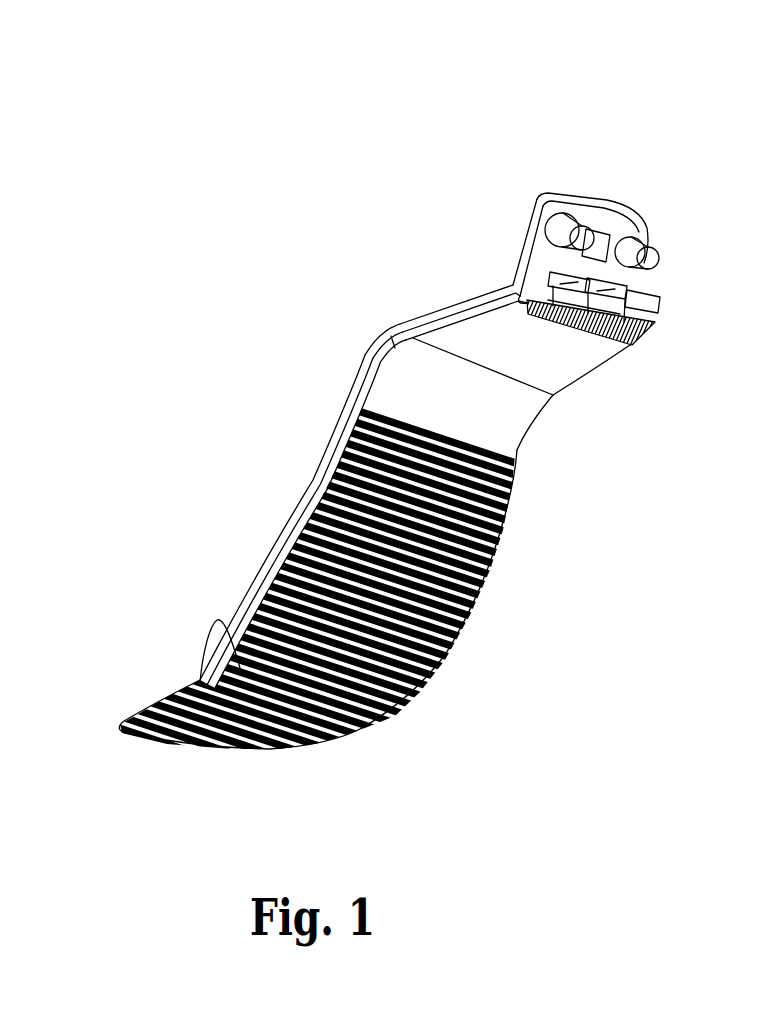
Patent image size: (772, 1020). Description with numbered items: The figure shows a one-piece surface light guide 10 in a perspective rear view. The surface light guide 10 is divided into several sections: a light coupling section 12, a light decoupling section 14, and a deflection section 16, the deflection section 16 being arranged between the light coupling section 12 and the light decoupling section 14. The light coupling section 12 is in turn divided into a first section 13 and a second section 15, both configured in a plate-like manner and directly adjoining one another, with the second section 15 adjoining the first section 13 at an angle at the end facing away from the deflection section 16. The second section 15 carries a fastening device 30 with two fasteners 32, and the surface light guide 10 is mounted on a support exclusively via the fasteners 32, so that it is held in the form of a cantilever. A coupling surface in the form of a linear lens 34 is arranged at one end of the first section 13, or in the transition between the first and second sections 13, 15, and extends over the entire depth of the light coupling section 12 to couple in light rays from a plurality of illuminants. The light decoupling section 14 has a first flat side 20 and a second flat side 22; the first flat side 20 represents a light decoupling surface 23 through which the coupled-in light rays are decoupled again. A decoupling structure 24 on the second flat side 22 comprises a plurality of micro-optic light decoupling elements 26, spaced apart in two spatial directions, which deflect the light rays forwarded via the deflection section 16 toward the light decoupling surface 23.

The surface light guide 10 is at (573, 158).
The light coupling section 12 is at (535, 183).
The first section 13 is at (590, 396).
The light decoupling section 14 is at (337, 328).
The second section 15 is at (526, 168).
The deflection section 16 is at (400, 307).
The first flat side 20 is at (199, 675).
The second flat side 22 is at (464, 613).
The light decoupling surface 23 is at (196, 719).
The decoupling structure 24 is at (404, 698).
The light decoupling elements 26 is at (510, 478).
The fastening device 30 is at (611, 195).
The fasteners 32 is at (645, 244).
The linear lens 34 is at (560, 338).